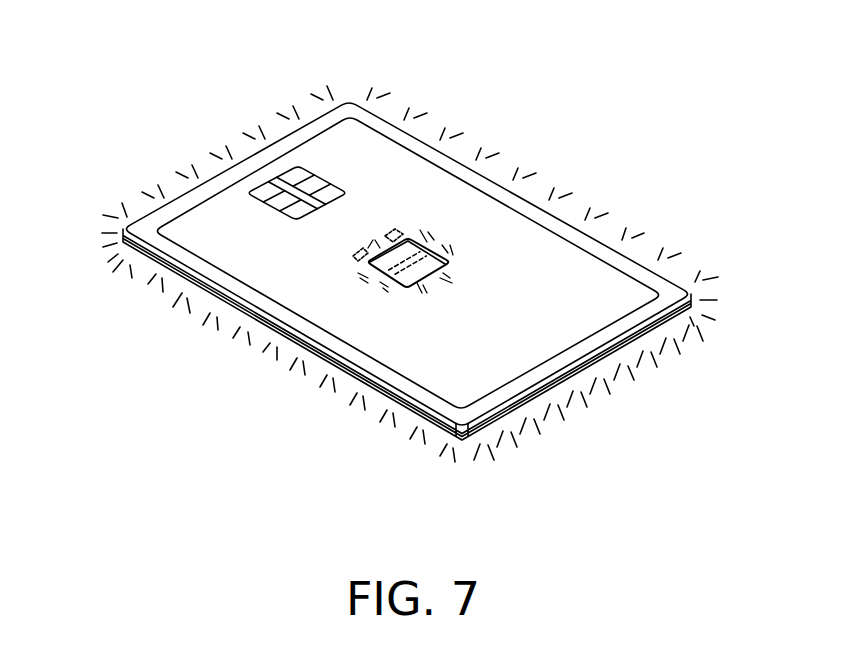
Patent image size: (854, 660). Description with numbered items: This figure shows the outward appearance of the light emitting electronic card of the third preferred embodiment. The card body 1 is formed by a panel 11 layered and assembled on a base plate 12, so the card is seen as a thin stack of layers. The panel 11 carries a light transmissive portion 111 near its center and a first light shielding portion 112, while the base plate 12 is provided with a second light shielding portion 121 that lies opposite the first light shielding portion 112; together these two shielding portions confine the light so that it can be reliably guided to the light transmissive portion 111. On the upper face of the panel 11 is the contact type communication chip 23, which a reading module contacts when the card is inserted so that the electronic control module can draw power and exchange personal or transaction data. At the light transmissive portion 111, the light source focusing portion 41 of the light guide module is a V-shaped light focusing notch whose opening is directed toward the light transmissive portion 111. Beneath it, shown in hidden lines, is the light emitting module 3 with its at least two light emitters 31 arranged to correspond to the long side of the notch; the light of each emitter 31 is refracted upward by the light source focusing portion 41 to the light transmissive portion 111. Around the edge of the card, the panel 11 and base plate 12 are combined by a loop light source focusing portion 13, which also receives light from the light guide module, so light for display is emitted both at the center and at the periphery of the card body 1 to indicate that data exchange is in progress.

The card body 1 is at (423, 285).
The panel 11 is at (655, 323).
The light transmissive portion 111 is at (453, 262).
The first light shielding portion 112 is at (553, 263).
The base plate 12 is at (176, 278).
The second light shielding portion 121 is at (425, 423).
The loop light source focusing portion 13 is at (597, 362).
The contact type communication chip 23 is at (279, 182).
The light emitting module 3 is at (343, 282).
The light emitters 31 is at (354, 260).
The light source focusing portion 41 is at (419, 235).